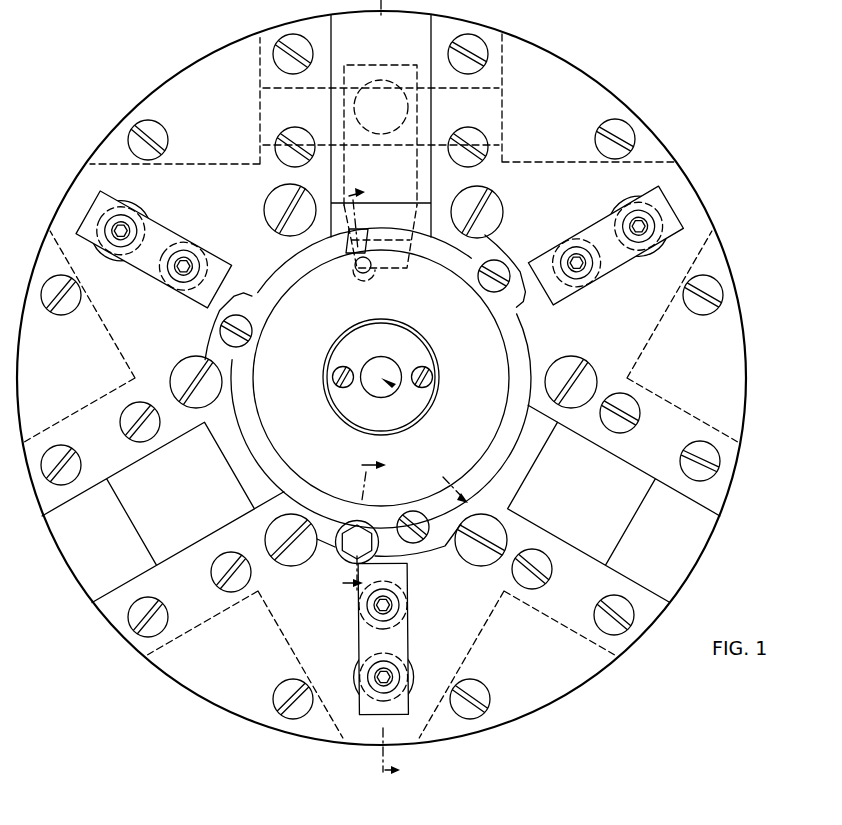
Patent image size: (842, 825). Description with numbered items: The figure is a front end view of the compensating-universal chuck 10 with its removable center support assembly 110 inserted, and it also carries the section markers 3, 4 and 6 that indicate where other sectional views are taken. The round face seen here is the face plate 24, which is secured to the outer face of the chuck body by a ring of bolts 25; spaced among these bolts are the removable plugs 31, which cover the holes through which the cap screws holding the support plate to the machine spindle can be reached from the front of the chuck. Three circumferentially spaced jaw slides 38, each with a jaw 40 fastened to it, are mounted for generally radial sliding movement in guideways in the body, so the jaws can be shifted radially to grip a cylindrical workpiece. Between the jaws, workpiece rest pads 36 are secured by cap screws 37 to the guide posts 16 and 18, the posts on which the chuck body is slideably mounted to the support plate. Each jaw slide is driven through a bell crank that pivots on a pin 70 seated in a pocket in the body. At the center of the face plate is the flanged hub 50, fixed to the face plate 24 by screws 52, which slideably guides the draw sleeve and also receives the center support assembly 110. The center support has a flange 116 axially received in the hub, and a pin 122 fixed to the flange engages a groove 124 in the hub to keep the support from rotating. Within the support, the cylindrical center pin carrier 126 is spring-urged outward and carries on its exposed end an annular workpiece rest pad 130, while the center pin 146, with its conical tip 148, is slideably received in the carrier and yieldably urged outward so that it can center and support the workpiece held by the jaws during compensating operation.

The compensating-universal chuck 10 is at (124, 659).
The face plate 24 is at (189, 684).
The bolts 25 is at (286, 137).
The removable plugs 31 is at (502, 204).
The workpiece rest pads 36 is at (161, 241).
The cap screws 37 is at (186, 263).
The guide post 16 is at (172, 291).
The guide post 18 is at (107, 259).
The jaw slides 38 is at (249, 467).
The jaws 40 is at (394, 48).
The flanged hub 50 is at (508, 316).
The screws 52 is at (500, 267).
The pin 70 is at (487, 88).
The center support assembly 110 is at (335, 324).
The flange 116 is at (490, 419).
The pin 122 is at (371, 271).
The groove 124 is at (349, 255).
The center pin carrier 126 is at (333, 357).
The annular workpiece rest pad 130 is at (401, 419).
The center pin 146 is at (379, 371).
The conical tip 148 is at (386, 384).
The section line 3- 3 is at (397, 391).
The section line 4- 4 is at (353, 522).
The section line 6- 6 is at (426, 339).